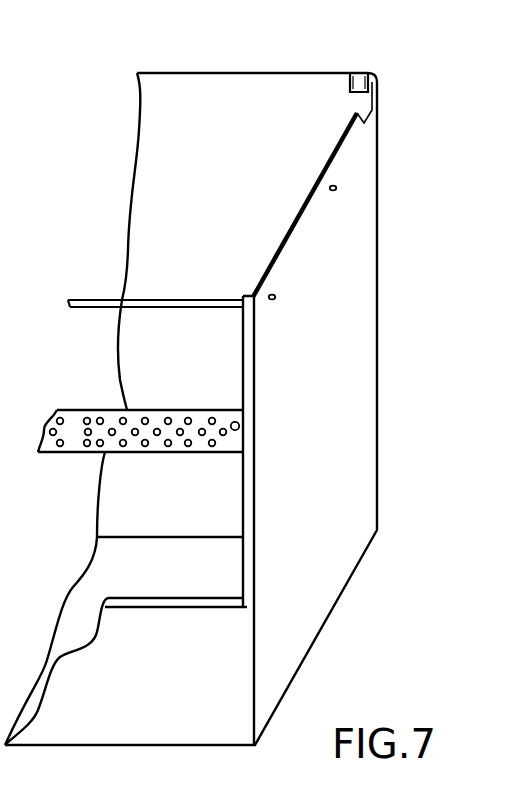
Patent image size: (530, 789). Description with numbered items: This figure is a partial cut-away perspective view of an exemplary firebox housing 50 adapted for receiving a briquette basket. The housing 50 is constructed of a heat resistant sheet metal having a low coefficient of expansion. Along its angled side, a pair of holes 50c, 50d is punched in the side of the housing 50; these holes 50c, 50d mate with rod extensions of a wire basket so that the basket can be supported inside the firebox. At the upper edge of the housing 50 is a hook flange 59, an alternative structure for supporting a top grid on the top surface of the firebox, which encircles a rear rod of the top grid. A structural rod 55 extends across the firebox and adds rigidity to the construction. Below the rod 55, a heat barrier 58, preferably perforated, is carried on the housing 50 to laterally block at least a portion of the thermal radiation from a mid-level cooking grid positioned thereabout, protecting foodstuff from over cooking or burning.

The housing 50 is at (370, 446).
The hole 50c is at (277, 294).
The hole 50d is at (338, 185).
The structural rod 55 is at (88, 308).
The heat barrier 58 is at (180, 415).
The hook flange 59 is at (352, 84).